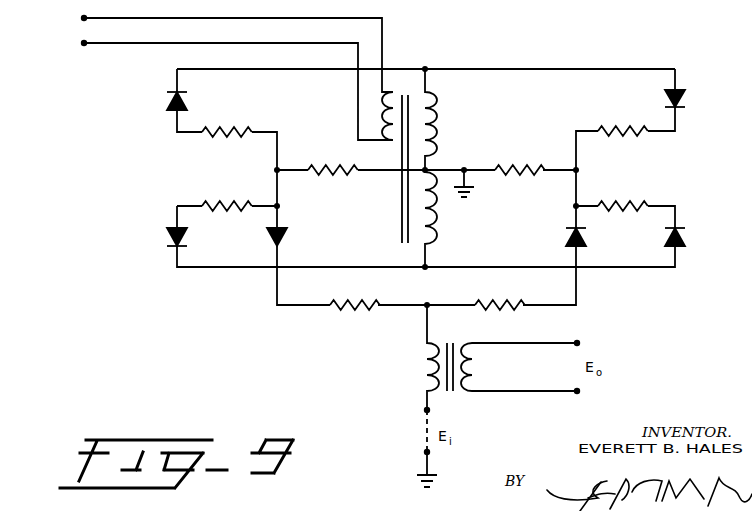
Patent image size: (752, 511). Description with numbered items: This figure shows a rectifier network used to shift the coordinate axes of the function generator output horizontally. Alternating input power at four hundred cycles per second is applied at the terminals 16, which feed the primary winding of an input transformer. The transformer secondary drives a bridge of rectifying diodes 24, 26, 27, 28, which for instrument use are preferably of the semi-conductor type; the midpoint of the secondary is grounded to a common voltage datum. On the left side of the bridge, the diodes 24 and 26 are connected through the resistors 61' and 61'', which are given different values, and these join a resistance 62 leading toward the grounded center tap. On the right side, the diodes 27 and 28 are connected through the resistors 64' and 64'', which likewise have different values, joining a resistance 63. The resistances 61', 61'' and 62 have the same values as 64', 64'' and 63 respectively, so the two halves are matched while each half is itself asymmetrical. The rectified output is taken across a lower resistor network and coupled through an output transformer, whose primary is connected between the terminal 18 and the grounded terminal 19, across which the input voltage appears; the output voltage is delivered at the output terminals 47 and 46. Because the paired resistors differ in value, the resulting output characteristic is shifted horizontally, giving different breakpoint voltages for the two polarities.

The terminals 16 is at (84, 43).
The terminal 18 is at (424, 410).
The terminal 19 is at (424, 452).
The rectifying diode 24 is at (187, 101).
The rectifying diode 26 is at (166, 233).
The rectifying diode 27 is at (685, 104).
The rectifying diode 28 is at (687, 232).
The output terminal 46 is at (580, 391).
The output terminal 47 is at (580, 343).
The resistor 61' is at (230, 122).
The resistor 61'' is at (232, 198).
The resistance 62 is at (336, 175).
The resistance 63 is at (518, 165).
The resistor 64' is at (619, 122).
The resistor 64'' is at (628, 198).